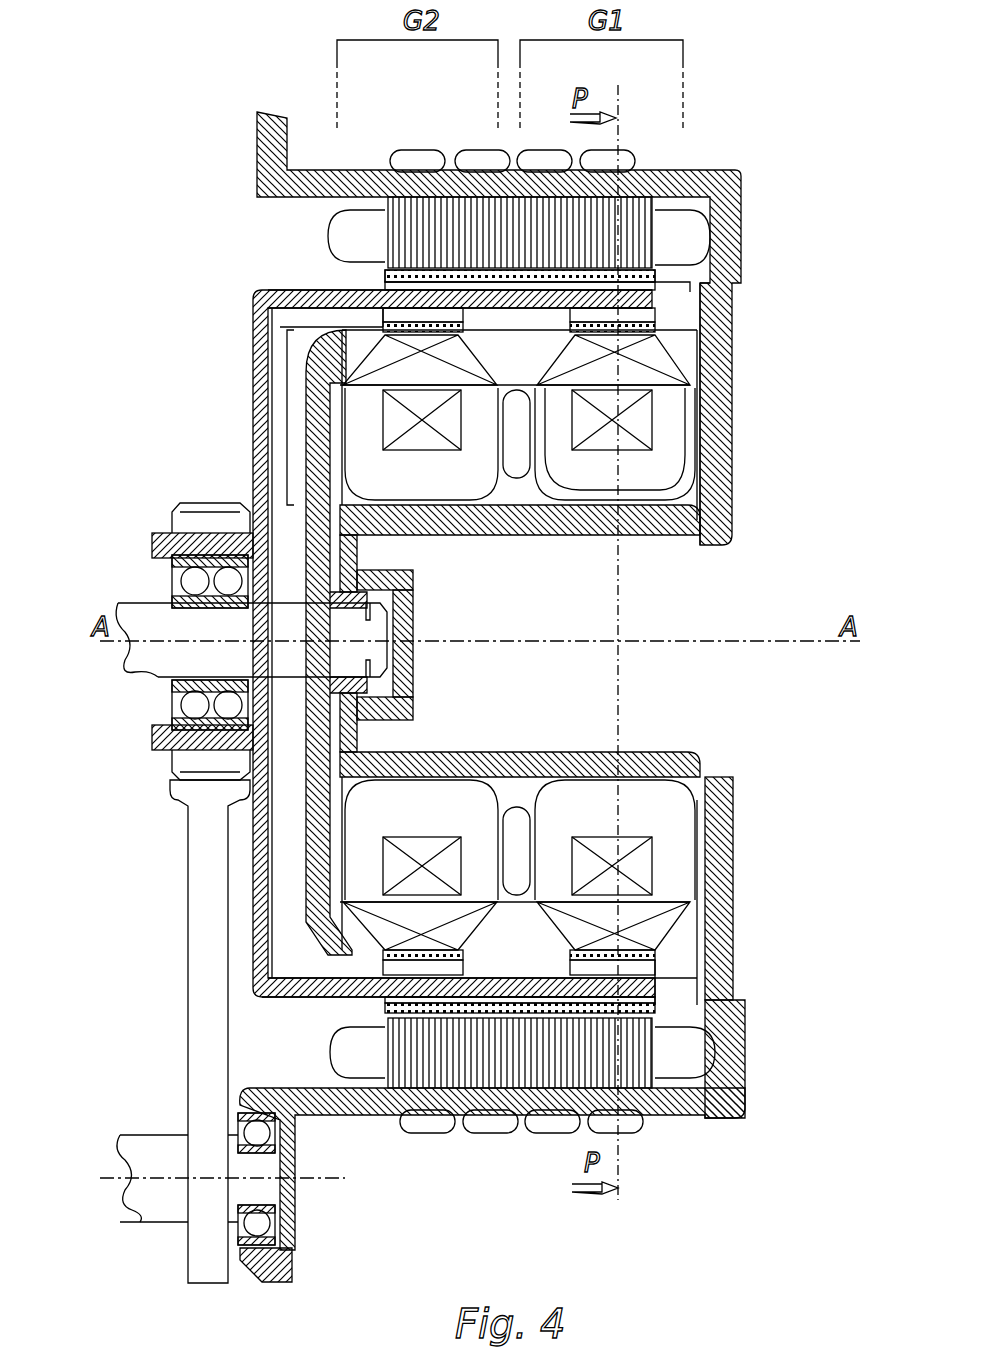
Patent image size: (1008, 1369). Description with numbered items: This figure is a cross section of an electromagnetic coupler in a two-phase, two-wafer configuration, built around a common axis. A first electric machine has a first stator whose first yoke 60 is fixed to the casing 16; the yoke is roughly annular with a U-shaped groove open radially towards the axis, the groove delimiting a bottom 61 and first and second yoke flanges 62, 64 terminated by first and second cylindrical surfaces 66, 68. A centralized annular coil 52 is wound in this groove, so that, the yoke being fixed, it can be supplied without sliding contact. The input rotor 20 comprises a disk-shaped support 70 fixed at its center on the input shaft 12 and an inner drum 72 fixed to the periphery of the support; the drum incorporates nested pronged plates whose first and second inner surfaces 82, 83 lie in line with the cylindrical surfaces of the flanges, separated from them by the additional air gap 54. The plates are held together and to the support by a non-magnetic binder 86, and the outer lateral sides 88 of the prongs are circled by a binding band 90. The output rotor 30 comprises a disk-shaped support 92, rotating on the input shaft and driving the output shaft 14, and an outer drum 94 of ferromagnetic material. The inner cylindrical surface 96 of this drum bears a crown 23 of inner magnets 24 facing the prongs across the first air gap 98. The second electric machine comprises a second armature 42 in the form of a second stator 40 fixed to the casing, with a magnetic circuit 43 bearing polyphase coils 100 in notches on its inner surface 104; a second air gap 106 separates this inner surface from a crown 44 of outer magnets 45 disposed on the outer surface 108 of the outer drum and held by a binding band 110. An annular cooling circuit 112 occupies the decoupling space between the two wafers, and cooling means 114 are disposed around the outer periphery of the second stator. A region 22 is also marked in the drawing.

The input shaft 12 is at (130, 668).
The output shaft 14 is at (140, 1210).
The casing 16 is at (735, 1075).
The input rotor 20 is at (300, 877).
The gap 22 is at (287, 418).
The crown of inner magnets 23 is at (670, 985).
The inner magnets 24 is at (662, 980).
The output rotor 30 is at (255, 920).
The second stator 40 is at (690, 172).
The second armature 42 is at (660, 212).
The magnetic circuit 43 is at (663, 1112).
The crown of outer magnets 44 is at (385, 274).
The outer magnets 45 is at (688, 292).
The centralized annular coil 52 is at (640, 865).
The additional air gap 54 is at (677, 897).
The first yoke 60 is at (671, 811).
The bottom 61 is at (662, 490).
The first yoke flange 62 is at (680, 437).
The second yoke flange 64 is at (702, 470).
The first cylindrical surface 66 is at (680, 412).
The second cylindrical surface 68 is at (556, 443).
The disk-shaped support 70 is at (306, 835).
The inner drum 72 is at (345, 948).
The first inner surface 82 is at (590, 378).
The second inner surface 83 is at (600, 355).
The non-magnetic binder 86 is at (605, 375).
The first outer lateral sides 88 is at (630, 945).
The binding band 90 is at (655, 957).
The disk-shaped support 92 is at (253, 372).
The outer drum 94 is at (270, 298).
The inner cylindrical surface 96 is at (262, 326).
The first air gap 98 is at (645, 967).
The polyphase coils 100 is at (684, 237).
The inner surface 104 is at (655, 290).
The second air gap 106 is at (380, 262).
The outer surface 108 is at (385, 286).
The binding band 110 is at (640, 1003).
The annular cooling circuit 112 is at (517, 478).
The cooling means 114 is at (655, 160).